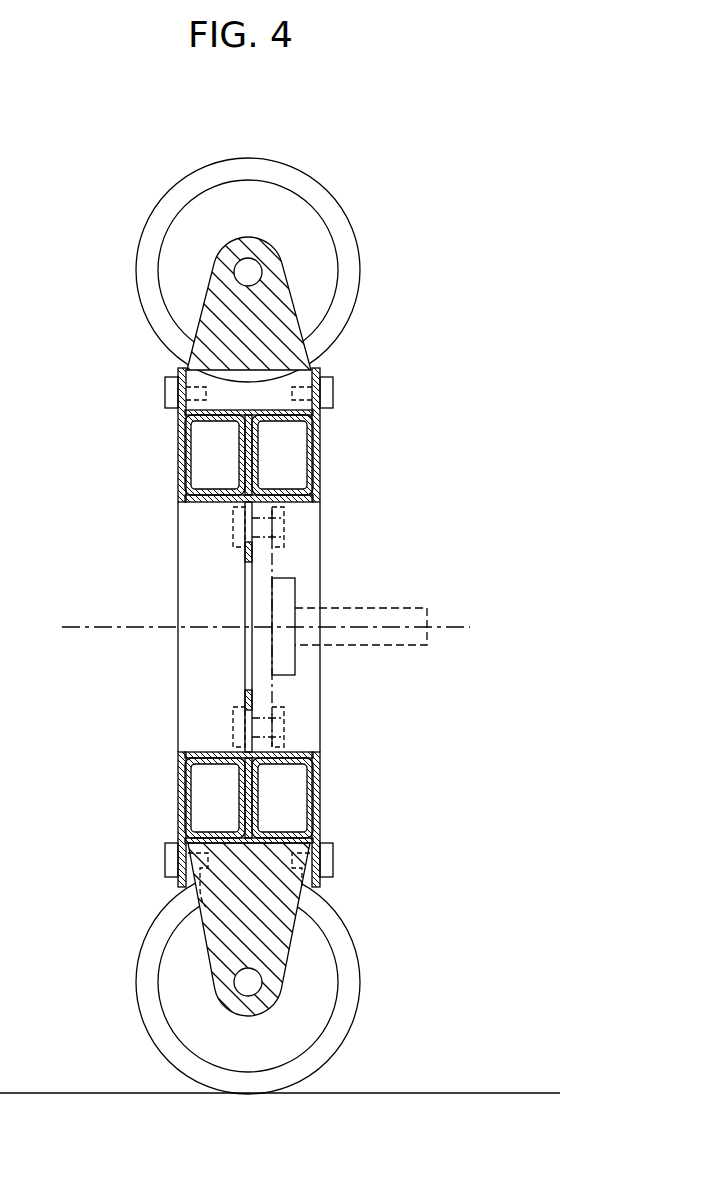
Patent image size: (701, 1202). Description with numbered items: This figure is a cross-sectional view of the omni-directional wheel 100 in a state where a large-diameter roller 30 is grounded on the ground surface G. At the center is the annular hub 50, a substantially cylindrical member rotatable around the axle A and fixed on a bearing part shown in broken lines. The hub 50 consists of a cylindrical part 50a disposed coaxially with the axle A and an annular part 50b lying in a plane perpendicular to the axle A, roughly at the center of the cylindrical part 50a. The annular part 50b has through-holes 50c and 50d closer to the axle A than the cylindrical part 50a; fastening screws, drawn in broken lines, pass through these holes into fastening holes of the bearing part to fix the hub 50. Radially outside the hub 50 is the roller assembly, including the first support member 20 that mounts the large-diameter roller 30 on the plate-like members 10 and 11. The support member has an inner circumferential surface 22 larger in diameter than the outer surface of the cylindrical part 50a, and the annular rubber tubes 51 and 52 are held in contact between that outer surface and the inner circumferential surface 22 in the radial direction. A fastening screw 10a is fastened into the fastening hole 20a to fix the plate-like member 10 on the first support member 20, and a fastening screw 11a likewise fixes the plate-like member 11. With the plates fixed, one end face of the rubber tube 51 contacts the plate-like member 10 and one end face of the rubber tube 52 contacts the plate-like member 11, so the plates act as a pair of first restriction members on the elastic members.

The omni-directional wheel 100 is at (363, 143).
The large-diameter roller 30 is at (133, 218).
The first support member 20 is at (293, 302).
The fastening hole 20a is at (192, 890).
The hub 50 is at (335, 538).
The cylindrical part 50a is at (203, 753).
The annular part 50b is at (247, 777).
The through-hole 50c is at (223, 710).
The through-hole 50d is at (218, 530).
The rubber tube 51 is at (188, 793).
The rubber tube 52 is at (313, 772).
The inner circumferential surface 22 is at (238, 825).
The plate-like member 10 is at (178, 878).
The fastening screw 10a is at (167, 863).
The plate-like member 11 is at (320, 800).
The fastening screw 11a is at (333, 857).
The axle A is at (278, 629).
The ground surface G is at (515, 1093).